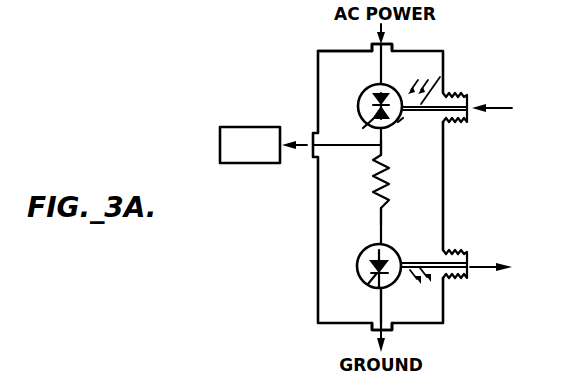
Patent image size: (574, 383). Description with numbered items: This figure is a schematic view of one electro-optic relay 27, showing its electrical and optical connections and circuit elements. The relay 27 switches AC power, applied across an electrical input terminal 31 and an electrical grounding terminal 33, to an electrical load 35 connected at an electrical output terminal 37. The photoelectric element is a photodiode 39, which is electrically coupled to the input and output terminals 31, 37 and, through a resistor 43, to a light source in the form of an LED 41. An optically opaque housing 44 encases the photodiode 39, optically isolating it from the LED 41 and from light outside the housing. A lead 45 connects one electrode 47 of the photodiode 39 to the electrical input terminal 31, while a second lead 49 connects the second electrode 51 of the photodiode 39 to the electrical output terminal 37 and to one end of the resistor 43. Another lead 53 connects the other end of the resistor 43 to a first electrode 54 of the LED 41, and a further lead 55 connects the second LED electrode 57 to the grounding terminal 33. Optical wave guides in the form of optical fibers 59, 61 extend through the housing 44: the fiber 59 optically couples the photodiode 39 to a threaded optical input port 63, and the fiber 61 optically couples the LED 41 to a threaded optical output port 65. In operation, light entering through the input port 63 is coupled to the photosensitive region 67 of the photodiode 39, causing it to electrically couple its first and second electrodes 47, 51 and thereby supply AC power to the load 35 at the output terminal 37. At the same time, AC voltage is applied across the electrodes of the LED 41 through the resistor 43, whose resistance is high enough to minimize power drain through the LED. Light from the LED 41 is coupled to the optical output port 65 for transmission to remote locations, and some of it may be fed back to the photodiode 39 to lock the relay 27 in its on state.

The electro-optic relay 27 is at (310, 272).
The electrical input terminal 31 is at (397, 46).
The electrical grounding terminal 33 is at (391, 327).
The electrical load 35 is at (230, 127).
The electrical output terminal 37 is at (313, 160).
The photodiode 39 is at (348, 103).
The LED 41 is at (354, 241).
The resistor 43 is at (383, 183).
The optically opaque housing 44 is at (343, 51).
The lead 45 is at (384, 76).
The first electrode of photodiode 47 is at (377, 92).
The second lead 49 is at (380, 150).
The second electrode of photodiode 51 is at (362, 130).
The lead 53 is at (380, 217).
The first electrode of LED 54 is at (386, 244).
The lead 55 is at (384, 299).
The second electrode of LED 57 is at (368, 284).
The optical fiber 59 is at (440, 78).
The optical fiber 61 is at (428, 272).
The threaded optical input port 63 is at (464, 96).
The threaded optical output port 65 is at (455, 248).
The photosensitive region of photodiode 67 is at (403, 118).